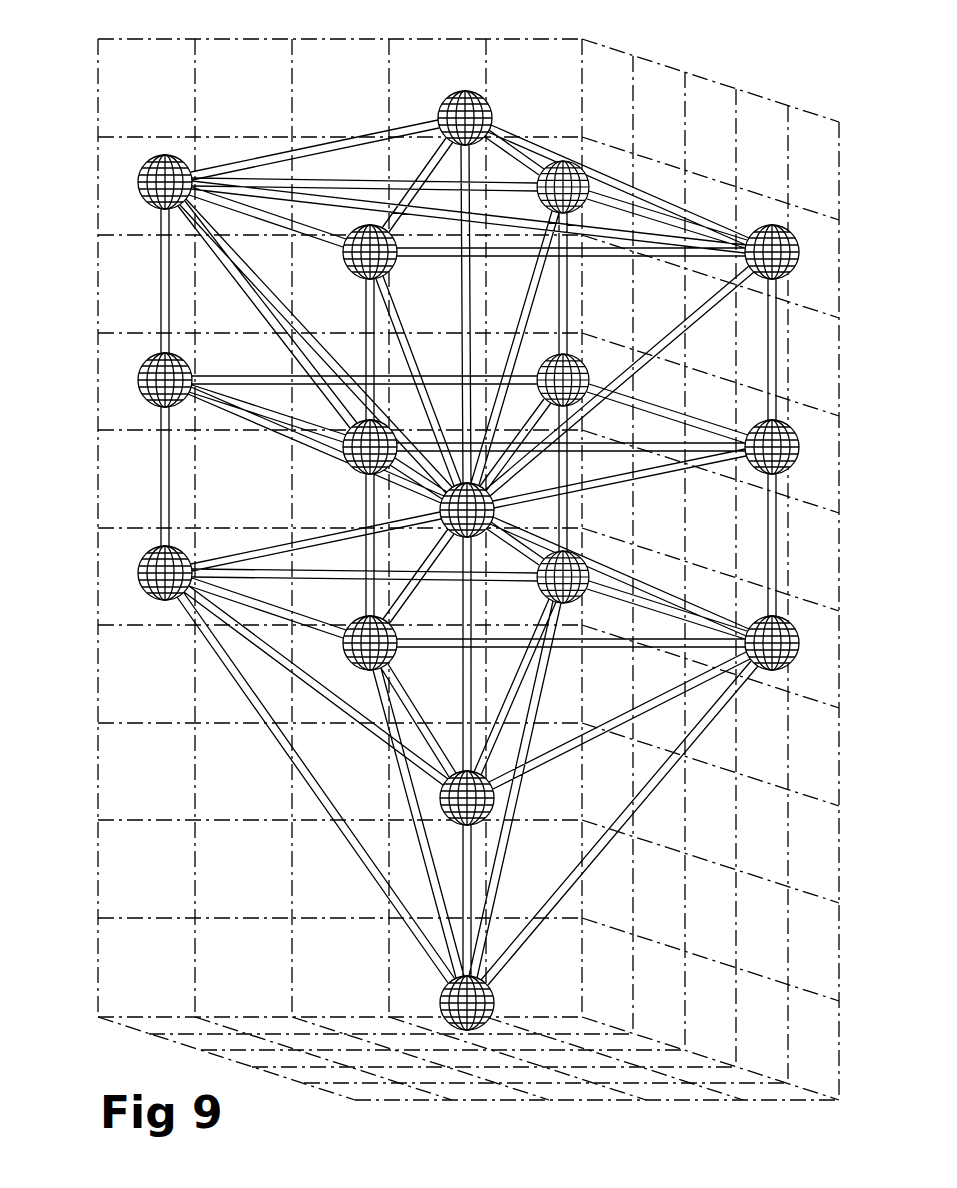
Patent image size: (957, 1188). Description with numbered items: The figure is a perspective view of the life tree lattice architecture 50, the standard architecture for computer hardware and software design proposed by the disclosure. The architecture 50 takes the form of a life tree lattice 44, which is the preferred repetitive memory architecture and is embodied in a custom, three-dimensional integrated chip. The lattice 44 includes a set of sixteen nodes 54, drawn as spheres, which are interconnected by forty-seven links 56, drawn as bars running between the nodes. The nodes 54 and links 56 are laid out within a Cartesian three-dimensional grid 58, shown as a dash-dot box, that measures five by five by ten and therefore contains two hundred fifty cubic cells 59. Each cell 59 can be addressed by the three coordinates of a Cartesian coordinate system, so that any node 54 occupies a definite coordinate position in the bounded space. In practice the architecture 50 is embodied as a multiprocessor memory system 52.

The life tree lattice 44 is at (157, 300).
The life tree lattice architecture 50 is at (117, 395).
The multiprocessor memory system 52 is at (518, 37).
The node 54 is at (138, 185).
The link 56 is at (325, 139).
The Cartesian three-dimensional grid 58 is at (690, 69).
The cubic cell 59 is at (553, 1003).